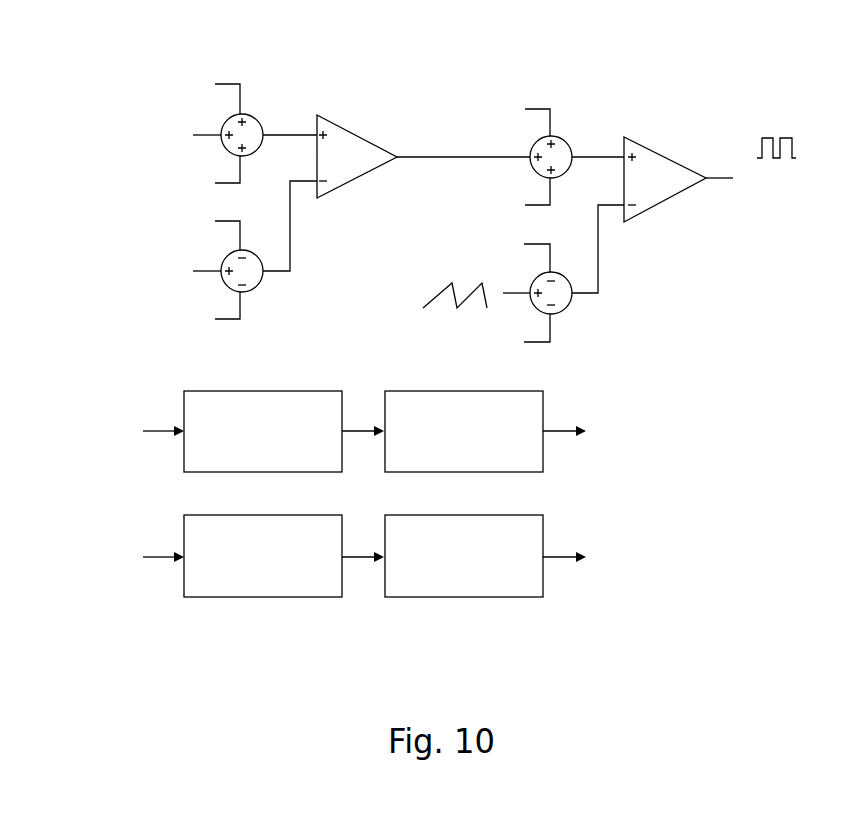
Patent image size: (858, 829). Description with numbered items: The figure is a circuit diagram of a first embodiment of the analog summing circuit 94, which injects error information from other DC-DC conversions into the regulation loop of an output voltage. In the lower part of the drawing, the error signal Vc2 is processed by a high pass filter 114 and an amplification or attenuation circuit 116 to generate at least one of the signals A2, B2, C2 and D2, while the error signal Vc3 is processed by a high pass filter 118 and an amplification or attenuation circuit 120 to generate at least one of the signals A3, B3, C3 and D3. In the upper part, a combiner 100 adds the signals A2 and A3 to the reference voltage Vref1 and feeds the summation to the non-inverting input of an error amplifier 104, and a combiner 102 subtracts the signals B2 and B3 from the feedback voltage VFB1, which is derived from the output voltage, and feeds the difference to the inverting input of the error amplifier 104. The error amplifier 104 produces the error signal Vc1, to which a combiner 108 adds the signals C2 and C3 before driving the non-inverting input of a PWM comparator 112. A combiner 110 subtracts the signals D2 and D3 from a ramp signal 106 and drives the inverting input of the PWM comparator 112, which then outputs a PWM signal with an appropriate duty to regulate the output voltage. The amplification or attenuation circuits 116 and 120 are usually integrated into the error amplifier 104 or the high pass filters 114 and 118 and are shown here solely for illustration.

The analog summing circuit 94 is at (793, 85).
The combiner 100 is at (258, 118).
The combiner 102 is at (256, 287).
The error amplifier 104 is at (355, 135).
The ramp signal 106 is at (436, 291).
The combiner 108 is at (565, 142).
The combiner 110 is at (565, 308).
The PWM comparator 112 is at (663, 156).
The high pass filter 114 is at (260, 391).
The amplification or attenuation circuit 116 is at (460, 391).
The high pass filter 118 is at (260, 515).
The amplification or attenuation circuit 120 is at (460, 515).